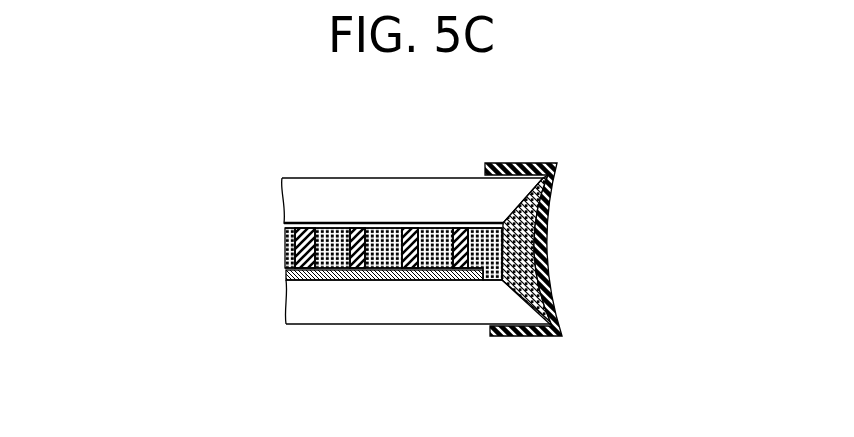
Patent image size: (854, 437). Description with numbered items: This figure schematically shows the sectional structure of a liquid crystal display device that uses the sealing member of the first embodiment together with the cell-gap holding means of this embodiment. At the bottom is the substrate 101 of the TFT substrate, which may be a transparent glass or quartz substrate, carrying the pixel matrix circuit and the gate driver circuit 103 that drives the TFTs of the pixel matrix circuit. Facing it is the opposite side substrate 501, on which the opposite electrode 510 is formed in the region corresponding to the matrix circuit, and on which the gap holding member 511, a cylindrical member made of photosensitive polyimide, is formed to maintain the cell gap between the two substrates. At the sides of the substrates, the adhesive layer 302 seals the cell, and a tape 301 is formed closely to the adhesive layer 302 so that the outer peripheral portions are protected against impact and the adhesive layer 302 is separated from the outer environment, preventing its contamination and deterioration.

The substrate 101 is at (302, 318).
The gate driver circuit 103 is at (443, 280).
The tape 301 is at (560, 110).
The adhesive layer 302 is at (545, 265).
The opposite side substrate 501 is at (352, 184).
The opposite electrode 510 is at (320, 226).
The gap holding member 511 is at (297, 253).